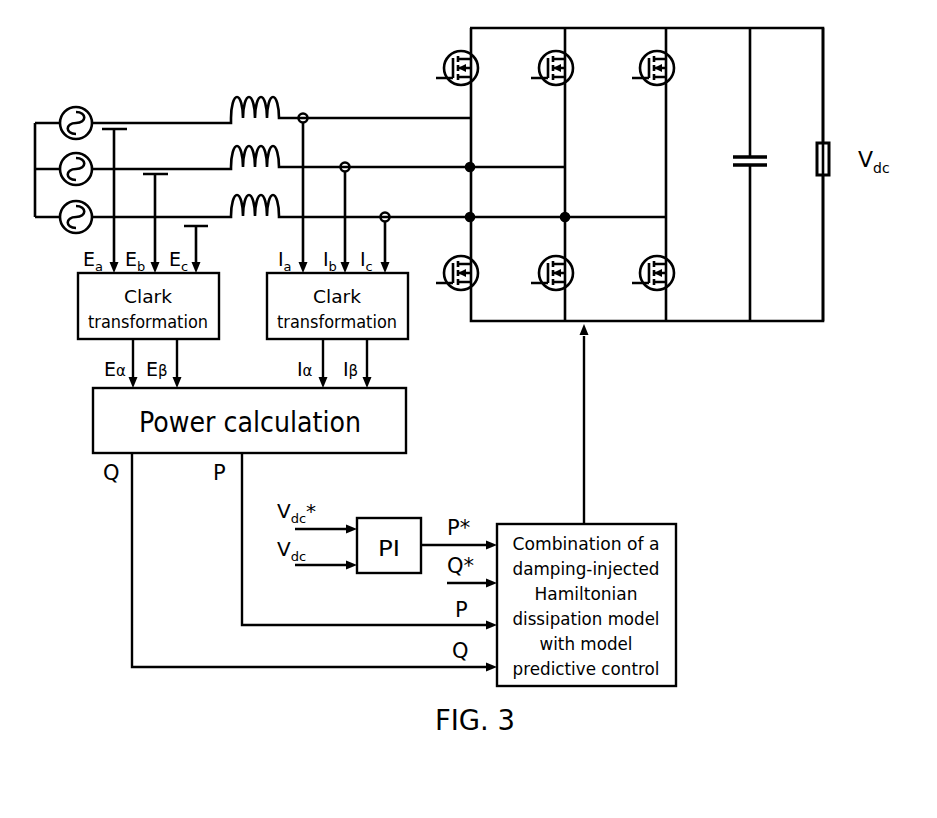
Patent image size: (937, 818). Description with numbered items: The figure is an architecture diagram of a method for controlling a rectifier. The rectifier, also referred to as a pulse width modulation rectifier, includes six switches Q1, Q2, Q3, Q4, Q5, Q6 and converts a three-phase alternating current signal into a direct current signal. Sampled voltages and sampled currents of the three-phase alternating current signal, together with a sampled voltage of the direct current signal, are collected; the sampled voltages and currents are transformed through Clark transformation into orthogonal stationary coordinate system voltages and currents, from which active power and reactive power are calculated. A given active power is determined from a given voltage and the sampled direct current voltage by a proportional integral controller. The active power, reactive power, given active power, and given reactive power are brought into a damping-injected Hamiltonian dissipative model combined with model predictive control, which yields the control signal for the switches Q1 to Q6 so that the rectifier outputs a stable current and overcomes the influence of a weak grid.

The switch Q1 is at (475, 68).
The switch Q2 is at (477, 273).
The switch Q3 is at (570, 68).
The switch Q4 is at (566, 272).
The switch Q5 is at (673, 68).
The switch Q6 is at (671, 273).